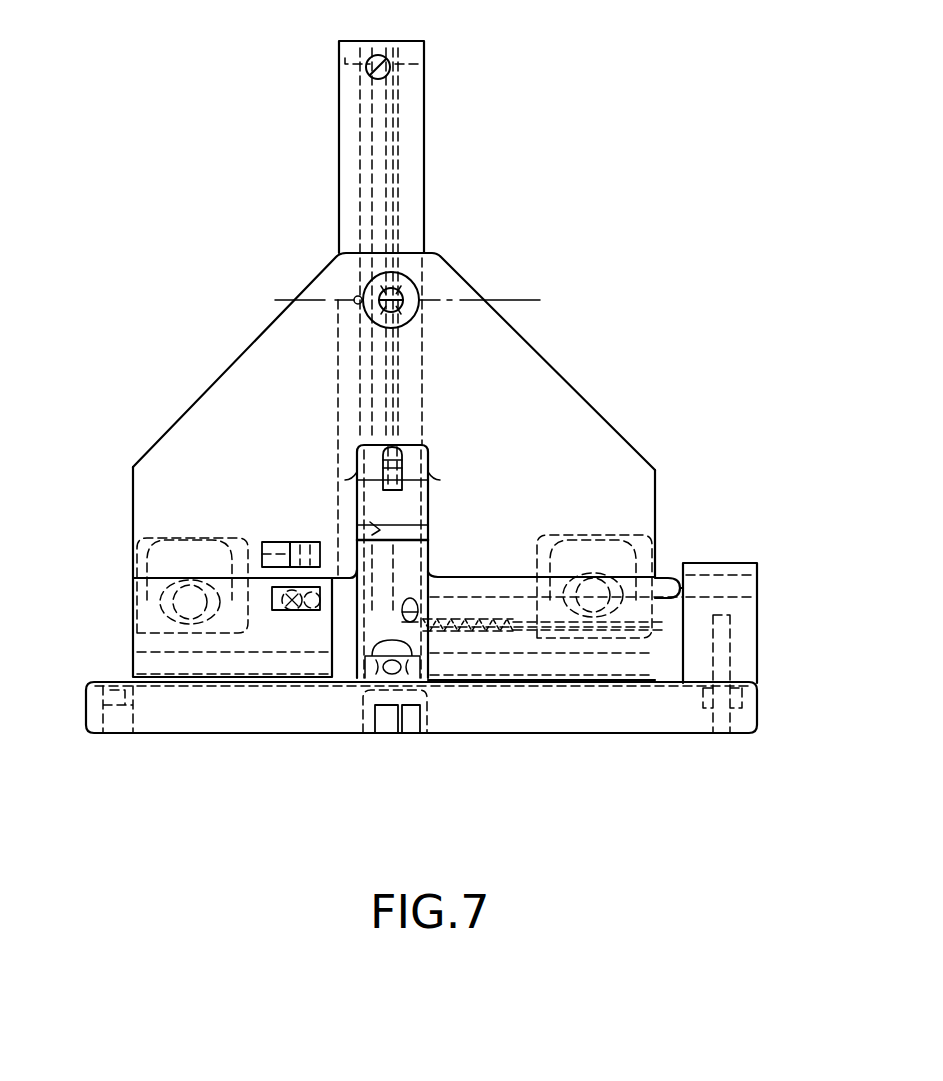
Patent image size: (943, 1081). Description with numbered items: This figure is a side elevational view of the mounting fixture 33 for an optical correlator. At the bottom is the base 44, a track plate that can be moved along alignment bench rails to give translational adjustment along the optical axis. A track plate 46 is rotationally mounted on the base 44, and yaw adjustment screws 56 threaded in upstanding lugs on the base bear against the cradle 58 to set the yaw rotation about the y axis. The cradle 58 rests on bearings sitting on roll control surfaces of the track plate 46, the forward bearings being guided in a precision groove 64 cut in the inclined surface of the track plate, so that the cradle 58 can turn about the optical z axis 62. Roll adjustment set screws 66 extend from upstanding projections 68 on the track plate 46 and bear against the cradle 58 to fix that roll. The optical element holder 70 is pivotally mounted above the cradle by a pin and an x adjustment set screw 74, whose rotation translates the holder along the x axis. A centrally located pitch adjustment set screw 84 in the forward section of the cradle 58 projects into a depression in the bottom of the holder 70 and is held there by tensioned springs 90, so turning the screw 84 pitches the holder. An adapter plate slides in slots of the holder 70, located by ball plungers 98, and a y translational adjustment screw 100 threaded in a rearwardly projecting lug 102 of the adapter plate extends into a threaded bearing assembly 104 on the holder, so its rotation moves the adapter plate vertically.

The mounting fixture 33 is at (485, 183).
The base 44 is at (305, 723).
The track plate 46 is at (133, 643).
The yaw adjustment screw 56 is at (707, 573).
The cradle 58 is at (570, 451).
The optical z axis 62 is at (520, 300).
The precision groove 64 is at (615, 645).
The roll adjustment set screw 66 is at (400, 446).
The upstanding projection 68 is at (428, 521).
The optical element holder 70 is at (424, 108).
The x adjustment set screw 74 is at (403, 293).
The pitch adjustment set screw 84 is at (512, 575).
The tensioned spring 90 is at (480, 633).
The ball plunger 98 is at (392, 64).
The y translational adjustment screw 100 is at (305, 545).
The rearwardly projecting lug 102 is at (270, 542).
The threaded bearing assembly 104 is at (287, 610).